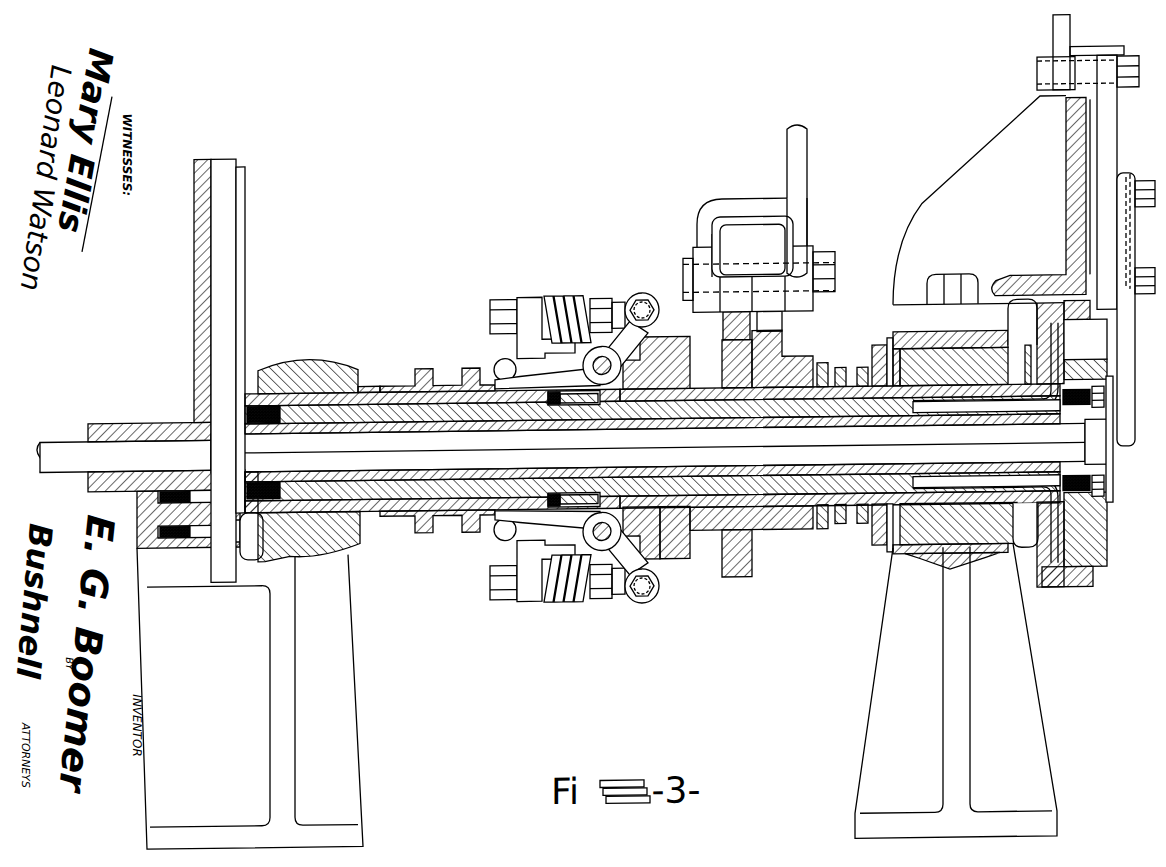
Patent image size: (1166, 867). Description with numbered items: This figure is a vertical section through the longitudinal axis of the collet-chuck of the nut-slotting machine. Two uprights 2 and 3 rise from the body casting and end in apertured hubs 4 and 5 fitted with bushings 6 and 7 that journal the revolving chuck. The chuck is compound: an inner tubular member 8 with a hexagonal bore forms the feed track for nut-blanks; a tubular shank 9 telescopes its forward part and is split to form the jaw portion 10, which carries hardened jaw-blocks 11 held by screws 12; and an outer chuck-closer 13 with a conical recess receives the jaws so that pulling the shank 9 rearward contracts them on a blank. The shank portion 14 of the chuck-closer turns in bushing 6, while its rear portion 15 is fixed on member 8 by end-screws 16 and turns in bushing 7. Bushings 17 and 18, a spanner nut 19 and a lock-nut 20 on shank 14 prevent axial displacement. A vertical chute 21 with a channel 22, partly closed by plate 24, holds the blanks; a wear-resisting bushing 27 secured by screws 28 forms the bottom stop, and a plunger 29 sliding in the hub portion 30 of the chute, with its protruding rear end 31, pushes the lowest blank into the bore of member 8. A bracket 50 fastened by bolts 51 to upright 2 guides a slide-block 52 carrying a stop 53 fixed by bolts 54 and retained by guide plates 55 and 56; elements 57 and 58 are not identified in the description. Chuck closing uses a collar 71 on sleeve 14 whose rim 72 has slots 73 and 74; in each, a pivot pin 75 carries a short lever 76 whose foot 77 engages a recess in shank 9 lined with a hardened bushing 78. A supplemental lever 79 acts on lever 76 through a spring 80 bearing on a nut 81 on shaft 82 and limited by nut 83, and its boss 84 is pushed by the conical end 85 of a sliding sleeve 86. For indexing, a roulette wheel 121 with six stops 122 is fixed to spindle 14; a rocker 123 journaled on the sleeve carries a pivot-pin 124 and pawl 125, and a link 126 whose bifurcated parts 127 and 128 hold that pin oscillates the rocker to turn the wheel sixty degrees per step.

The support or upright 2 is at (956, 691).
The support or upright 3 is at (250, 697).
The apertured hub-like portion 4 is at (953, 340).
The apertured hub-like portion 5 is at (309, 358).
The bushing 6 is at (887, 436).
The bushing 7 is at (369, 380).
The inner elongated tubular member 8 is at (648, 448).
The tubular shank 9 is at (771, 453).
The contracting or jaw portion 10 is at (1085, 339).
The hardened jaw-blocks 11 is at (1113, 503).
The screws 12 is at (1104, 404).
The chuck-closer 13 is at (1062, 602).
The shank portion of the chuck-closer 14 is at (817, 472).
The rear portion of the chuck-closer 15 is at (432, 457).
The end-screws 16 is at (247, 414).
The bushing 17 is at (1030, 560).
The bushing 18 is at (875, 352).
The spanner nut 19 is at (844, 447).
The lock-nut 20 is at (835, 445).
The vertical chute 21 is at (194, 242).
The channel 22 is at (223, 370).
The plate 24 is at (250, 340).
The wear-resisting bushing 27 is at (241, 556).
The screws 28 is at (166, 509).
The plunger 29 is at (125, 456).
The hub-like portion of the chute 30 is at (143, 422).
The rear end of the plunger 31 is at (40, 440).
The bracket 50 is at (979, 200).
The bolts 51 is at (952, 283).
The slide-block 52 is at (1053, 196).
The stop 53 is at (1135, 358).
The bolts 54 is at (1150, 279).
The guide plate 55 is at (1117, 120).
The guide plate 56 is at (1148, 230).
The bolt 57 is at (1053, 48).
The nut 58 is at (1139, 82).
The supporting collar 71 is at (673, 531).
The overhanging annular rim 72 is at (618, 543).
The radial slot 73 is at (656, 447).
The radial slot 74 is at (672, 575).
The pivot pin 75 is at (598, 448).
The short chuck-actuating lever 76 is at (642, 452).
The foot of the lever 77 is at (584, 409).
The hardened bushing 78 is at (557, 409).
The supplemental actuating lever 79 is at (528, 301).
The spring 80 is at (566, 300).
The nut 81 is at (606, 447).
The shaft 82 is at (624, 437).
The nut 83 is at (504, 450).
The bearing boss 84 is at (499, 452).
The conical end 85 is at (547, 451).
The sliding sleeve 86 is at (415, 383).
The roulette wheel 121 is at (745, 583).
The stops 122 is at (722, 326).
The rocker 123 is at (782, 348).
The pivot-pin 124 is at (835, 284).
The pawl 125 is at (738, 262).
The link 126 is at (796, 165).
The bifurcated part of the link 127 is at (697, 242).
The bifurcated part of the link 128 is at (807, 233).